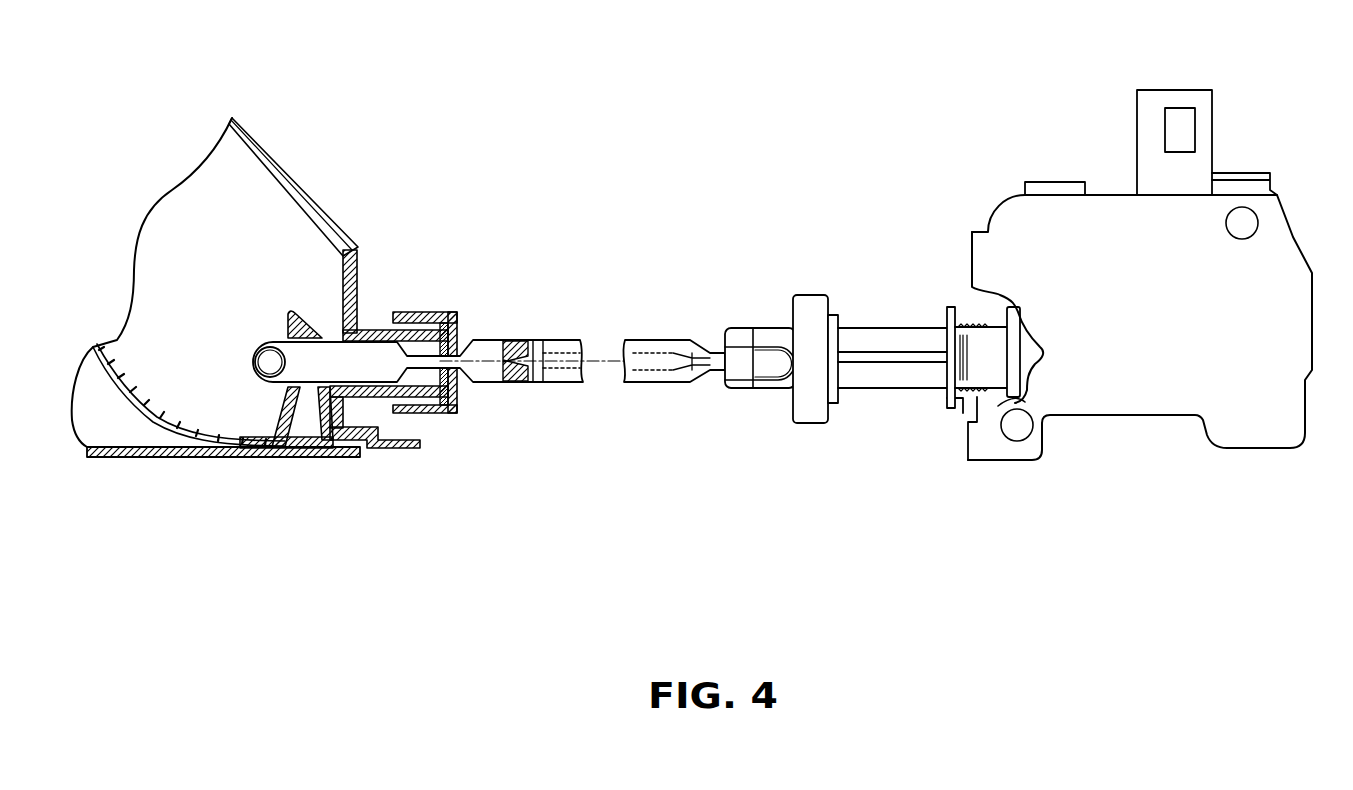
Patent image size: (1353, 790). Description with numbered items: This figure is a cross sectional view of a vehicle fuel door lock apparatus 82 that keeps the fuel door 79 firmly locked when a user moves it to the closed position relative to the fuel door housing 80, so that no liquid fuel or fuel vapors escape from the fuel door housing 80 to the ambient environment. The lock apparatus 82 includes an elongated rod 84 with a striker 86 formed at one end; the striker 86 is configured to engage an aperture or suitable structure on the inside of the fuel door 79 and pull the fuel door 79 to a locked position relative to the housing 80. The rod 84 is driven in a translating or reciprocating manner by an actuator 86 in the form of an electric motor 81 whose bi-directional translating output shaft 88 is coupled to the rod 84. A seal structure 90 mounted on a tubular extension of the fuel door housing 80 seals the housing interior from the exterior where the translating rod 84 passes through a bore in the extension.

The fuel door 79 is at (138, 403).
The fuel door housing 80 is at (283, 146).
The electric motor 81 is at (1077, 340).
The lock apparatus 82 is at (875, 311).
The elongated rod 84 is at (557, 340).
The striker 86 is at (252, 362).
The output shaft 88 is at (850, 365).
The seal structure 90 is at (437, 288).